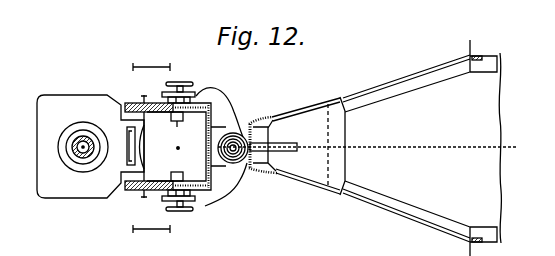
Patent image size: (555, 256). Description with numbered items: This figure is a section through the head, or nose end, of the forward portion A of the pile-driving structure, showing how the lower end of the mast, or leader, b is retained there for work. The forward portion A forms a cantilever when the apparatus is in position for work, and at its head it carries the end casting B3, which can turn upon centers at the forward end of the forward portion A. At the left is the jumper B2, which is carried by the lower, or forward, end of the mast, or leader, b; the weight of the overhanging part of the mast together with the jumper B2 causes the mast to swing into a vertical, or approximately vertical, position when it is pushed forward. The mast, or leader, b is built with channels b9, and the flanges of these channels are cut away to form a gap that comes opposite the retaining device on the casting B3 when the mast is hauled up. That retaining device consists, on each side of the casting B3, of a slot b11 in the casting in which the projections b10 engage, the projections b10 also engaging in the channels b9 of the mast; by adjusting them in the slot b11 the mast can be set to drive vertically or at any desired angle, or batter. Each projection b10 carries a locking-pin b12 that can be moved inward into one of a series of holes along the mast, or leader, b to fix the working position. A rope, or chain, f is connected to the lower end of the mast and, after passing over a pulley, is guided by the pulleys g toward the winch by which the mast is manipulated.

The jumper B2 is at (90, 146).
The end casting B3 is at (203, 184).
The mast or leader b is at (167, 170).
The channels b9 is at (188, 122).
The projections b10 is at (198, 110).
The slot b11 is at (131, 106).
The locking-pin b12 is at (176, 174).
The pulleys g is at (287, 147).
The rope or chain f is at (402, 147).
The forward portion A is at (383, 148).